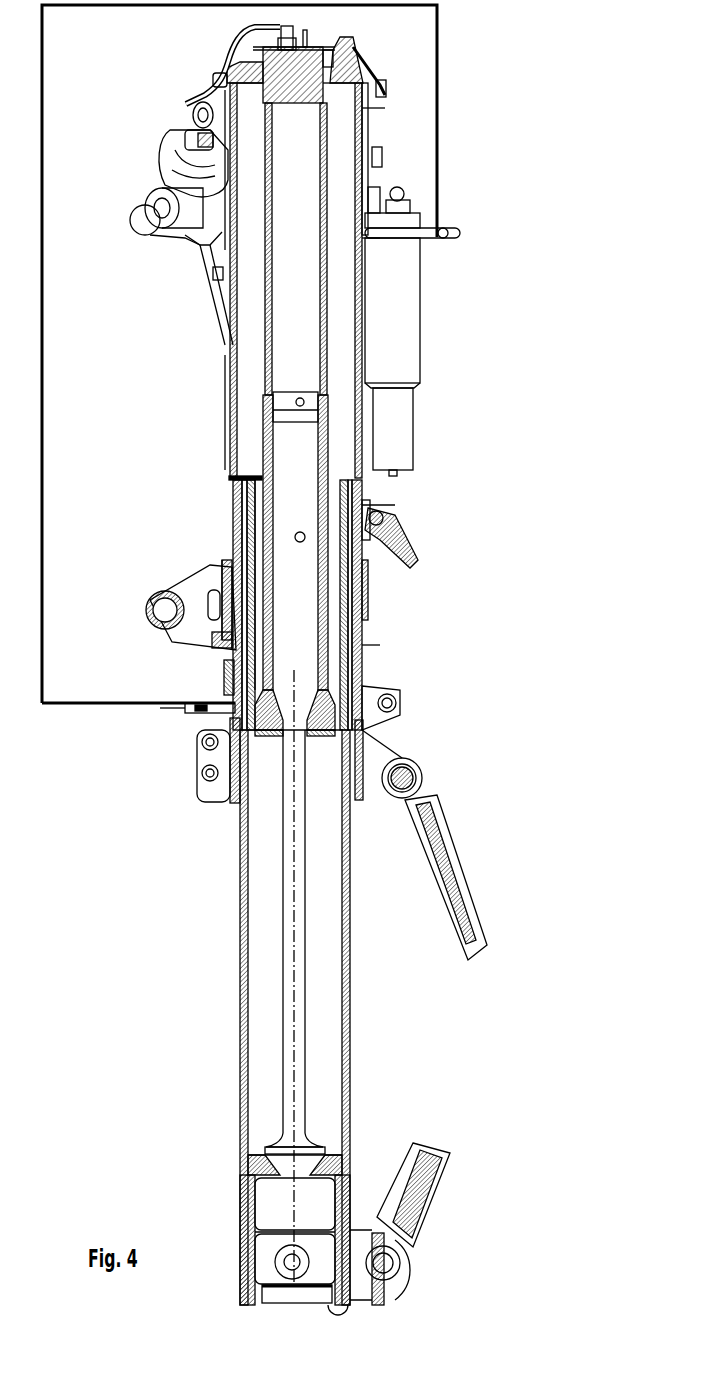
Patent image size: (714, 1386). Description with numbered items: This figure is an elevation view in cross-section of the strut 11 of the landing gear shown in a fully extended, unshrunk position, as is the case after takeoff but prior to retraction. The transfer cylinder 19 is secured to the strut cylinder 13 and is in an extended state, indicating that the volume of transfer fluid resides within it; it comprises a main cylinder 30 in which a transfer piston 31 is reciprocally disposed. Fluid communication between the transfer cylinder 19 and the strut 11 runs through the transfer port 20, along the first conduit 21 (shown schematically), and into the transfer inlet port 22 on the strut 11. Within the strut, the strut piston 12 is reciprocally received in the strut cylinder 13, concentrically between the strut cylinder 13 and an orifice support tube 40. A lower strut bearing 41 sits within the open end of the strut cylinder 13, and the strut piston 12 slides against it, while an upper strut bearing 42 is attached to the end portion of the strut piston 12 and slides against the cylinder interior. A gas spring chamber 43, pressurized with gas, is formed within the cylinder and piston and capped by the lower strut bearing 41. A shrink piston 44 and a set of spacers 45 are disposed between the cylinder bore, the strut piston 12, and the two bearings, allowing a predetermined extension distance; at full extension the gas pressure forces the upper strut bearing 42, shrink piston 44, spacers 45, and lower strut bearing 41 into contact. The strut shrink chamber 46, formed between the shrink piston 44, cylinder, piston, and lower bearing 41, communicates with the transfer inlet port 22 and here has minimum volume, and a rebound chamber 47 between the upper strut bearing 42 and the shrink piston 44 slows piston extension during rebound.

The strut 11 is at (170, 402).
The strut piston 12 is at (240, 953).
The strut cylinder 13 is at (360, 480).
The transfer cylinder 19 is at (454, 331).
The transfer port 20 is at (428, 237).
The first conduit 21 is at (438, 63).
The transfer inlet port 22 is at (207, 710).
The main cylinder 30 is at (422, 335).
The transfer piston 31 is at (417, 433).
The orifice support tube 40 is at (327, 562).
The lower strut bearing 41 is at (213, 800).
The upper strut bearing 42 is at (232, 468).
The gas spring chamber 43 is at (257, 547).
The shrink piston 44 is at (230, 675).
The set of spacers 45 is at (160, 627).
The strut shrink chamber 46 is at (360, 685).
The rebound chamber 47 is at (217, 638).